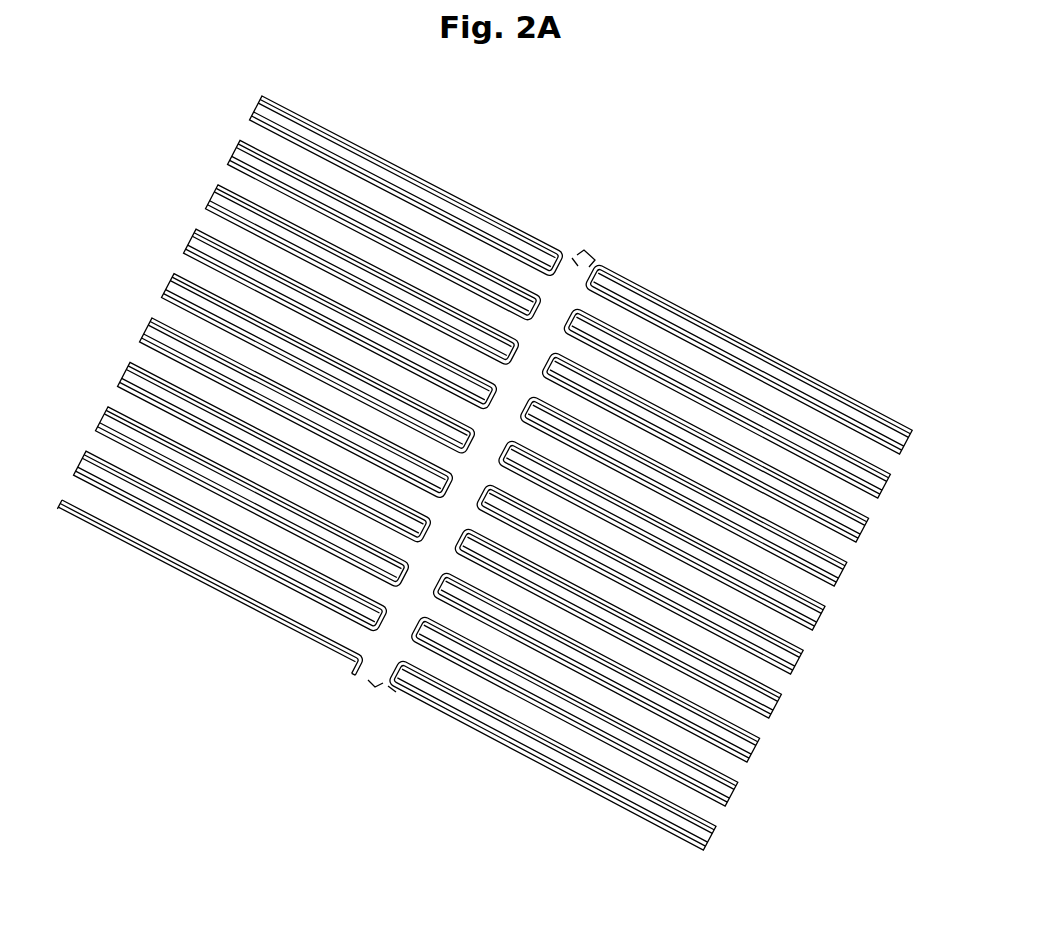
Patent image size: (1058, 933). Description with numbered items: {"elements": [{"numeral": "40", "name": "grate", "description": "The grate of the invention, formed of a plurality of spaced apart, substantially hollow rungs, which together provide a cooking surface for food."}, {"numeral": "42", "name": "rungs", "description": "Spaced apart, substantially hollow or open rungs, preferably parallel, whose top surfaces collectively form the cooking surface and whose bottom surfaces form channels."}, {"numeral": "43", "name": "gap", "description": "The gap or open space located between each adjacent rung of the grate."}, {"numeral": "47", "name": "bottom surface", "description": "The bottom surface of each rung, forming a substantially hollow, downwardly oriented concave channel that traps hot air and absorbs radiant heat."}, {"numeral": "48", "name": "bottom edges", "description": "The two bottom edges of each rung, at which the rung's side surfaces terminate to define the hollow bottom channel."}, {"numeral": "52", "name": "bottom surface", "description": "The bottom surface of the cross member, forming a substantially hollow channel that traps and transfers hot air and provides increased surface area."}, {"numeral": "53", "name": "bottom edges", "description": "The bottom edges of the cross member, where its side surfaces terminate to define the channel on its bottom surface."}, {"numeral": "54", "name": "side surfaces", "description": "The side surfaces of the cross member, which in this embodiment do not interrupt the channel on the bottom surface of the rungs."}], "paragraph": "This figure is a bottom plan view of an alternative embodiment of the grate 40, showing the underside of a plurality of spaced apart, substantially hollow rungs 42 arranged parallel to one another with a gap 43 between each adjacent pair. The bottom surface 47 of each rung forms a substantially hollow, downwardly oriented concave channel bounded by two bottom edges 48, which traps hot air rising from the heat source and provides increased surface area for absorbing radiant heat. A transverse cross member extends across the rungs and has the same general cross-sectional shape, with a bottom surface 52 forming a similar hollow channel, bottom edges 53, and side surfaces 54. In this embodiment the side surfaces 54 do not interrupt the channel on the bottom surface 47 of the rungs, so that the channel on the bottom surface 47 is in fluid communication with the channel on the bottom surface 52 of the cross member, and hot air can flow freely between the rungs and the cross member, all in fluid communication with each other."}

The cold plate fin assembly 40 is at (624, 210).
The fins 42 is at (154, 584).
The channels between fins 43 is at (248, 132).
The first fin side wall 47 is at (209, 193).
The second fin side wall 48 is at (69, 495).
The base plate edge stub 52 is at (575, 272).
The rounded fin end 53 is at (570, 288).
The half fin 54 is at (332, 653).